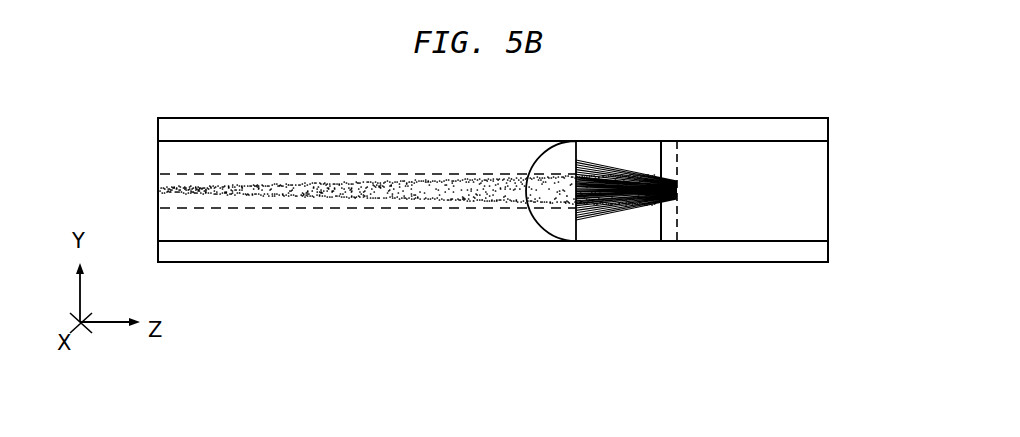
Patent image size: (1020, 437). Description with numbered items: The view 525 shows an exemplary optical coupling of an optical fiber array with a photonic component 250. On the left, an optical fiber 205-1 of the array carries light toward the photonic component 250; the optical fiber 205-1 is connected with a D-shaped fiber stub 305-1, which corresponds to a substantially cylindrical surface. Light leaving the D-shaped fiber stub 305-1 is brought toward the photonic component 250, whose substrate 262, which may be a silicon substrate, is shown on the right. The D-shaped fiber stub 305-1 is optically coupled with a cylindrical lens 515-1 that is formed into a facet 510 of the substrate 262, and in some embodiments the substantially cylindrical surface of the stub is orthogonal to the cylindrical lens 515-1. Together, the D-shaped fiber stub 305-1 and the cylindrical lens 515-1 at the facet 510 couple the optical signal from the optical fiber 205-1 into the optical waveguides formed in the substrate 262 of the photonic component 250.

The optical fiber 205-1 is at (149, 164).
The D-shaped fiber stub 305-1 is at (597, 144).
The view 525 is at (765, 88).
The photonic component 250 is at (828, 172).
The cylindrical lens 515-1 is at (670, 155).
The facet 510 is at (677, 211).
The substrate 262 is at (813, 218).